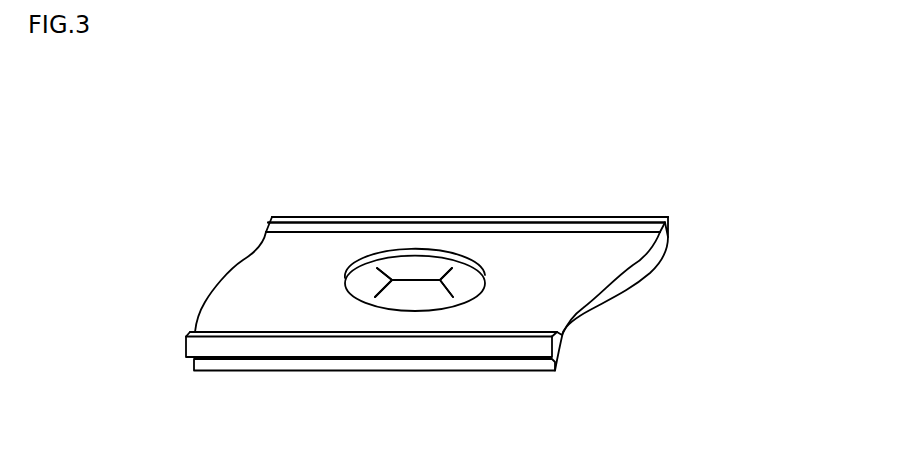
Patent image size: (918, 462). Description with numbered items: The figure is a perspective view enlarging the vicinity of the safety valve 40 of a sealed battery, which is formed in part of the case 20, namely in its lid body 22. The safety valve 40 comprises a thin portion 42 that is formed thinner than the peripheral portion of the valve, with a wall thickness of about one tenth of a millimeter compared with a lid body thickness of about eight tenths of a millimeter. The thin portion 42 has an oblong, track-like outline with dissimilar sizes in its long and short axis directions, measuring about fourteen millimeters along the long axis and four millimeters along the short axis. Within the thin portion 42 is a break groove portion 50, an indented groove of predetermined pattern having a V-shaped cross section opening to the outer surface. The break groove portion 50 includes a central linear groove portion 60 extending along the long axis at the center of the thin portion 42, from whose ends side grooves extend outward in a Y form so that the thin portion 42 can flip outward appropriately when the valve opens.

The case 20 is at (542, 213).
The lid body 22 is at (328, 214).
The safety valve 40 is at (490, 312).
The thin portion 42 is at (427, 300).
The break groove portion 50 is at (392, 348).
The central linear groove portion 60 is at (416, 271).